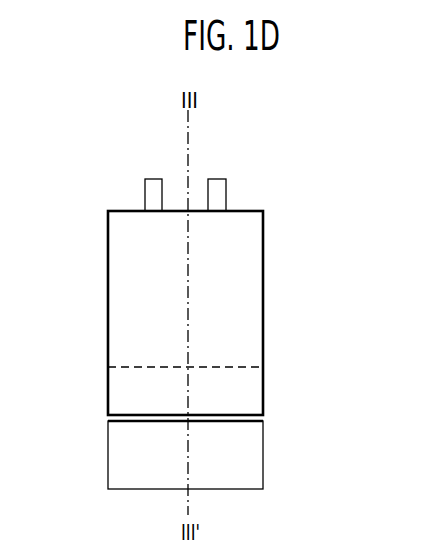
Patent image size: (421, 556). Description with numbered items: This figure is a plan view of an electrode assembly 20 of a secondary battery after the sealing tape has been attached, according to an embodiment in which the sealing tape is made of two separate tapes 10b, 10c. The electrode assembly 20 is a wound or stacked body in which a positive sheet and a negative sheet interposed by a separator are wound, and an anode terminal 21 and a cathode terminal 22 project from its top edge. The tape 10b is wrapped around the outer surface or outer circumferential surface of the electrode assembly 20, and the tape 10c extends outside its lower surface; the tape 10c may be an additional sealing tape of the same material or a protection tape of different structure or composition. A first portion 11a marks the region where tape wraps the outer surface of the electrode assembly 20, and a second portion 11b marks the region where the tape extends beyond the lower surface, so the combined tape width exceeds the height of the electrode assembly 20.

The electrode assembly 20 is at (240, 226).
The anode terminal 21 is at (152, 188).
The cathode terminal 22 is at (218, 188).
The tape 10b is at (273, 415).
The tape 10c is at (288, 368).
The first portion 11a is at (100, 211).
The second portion 11b is at (100, 421).